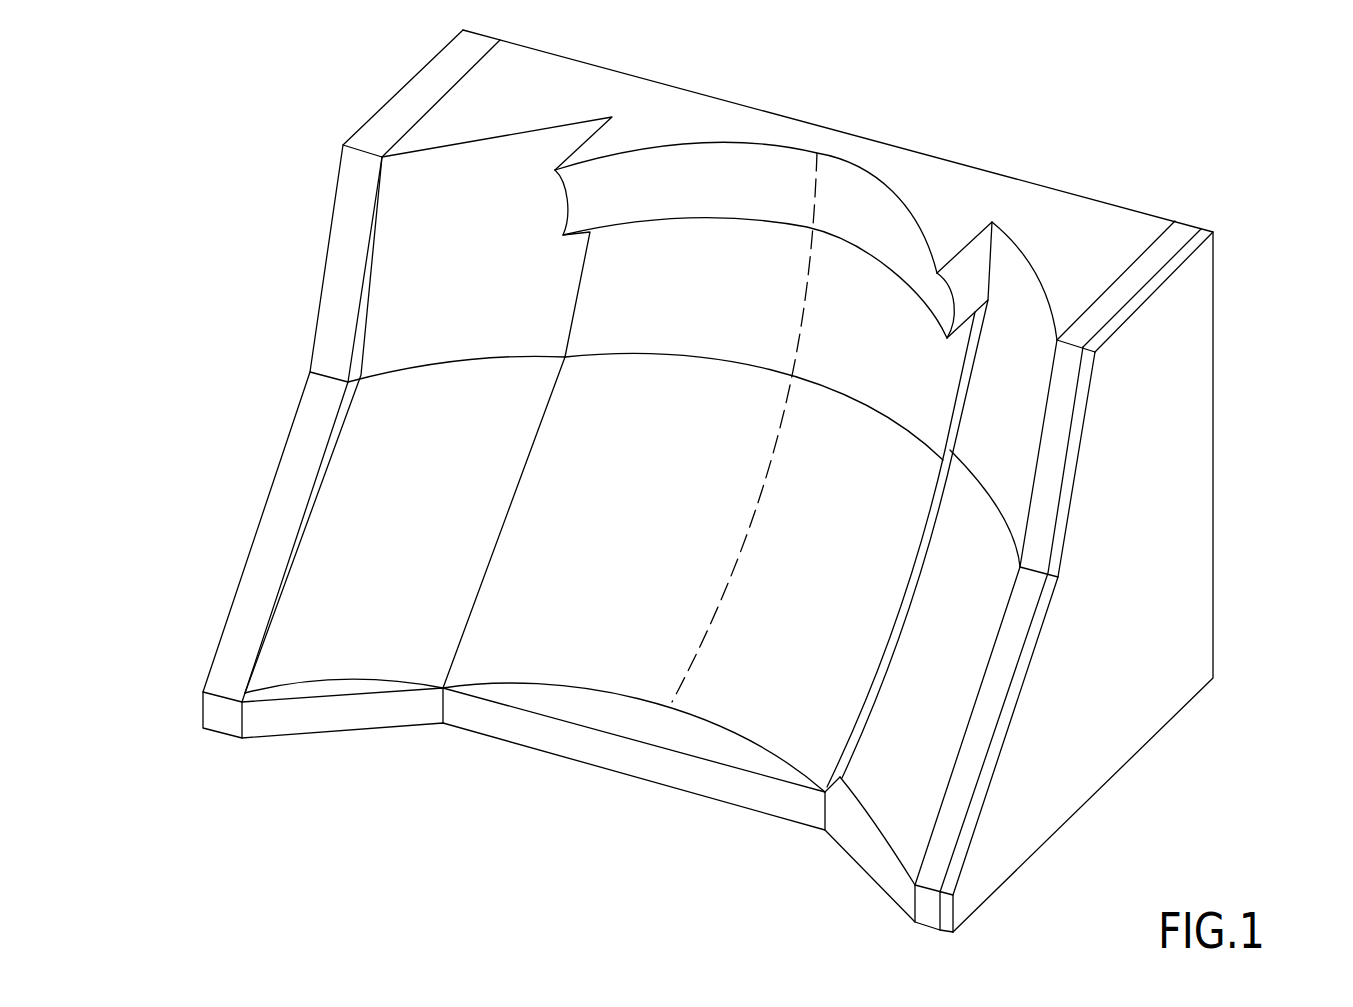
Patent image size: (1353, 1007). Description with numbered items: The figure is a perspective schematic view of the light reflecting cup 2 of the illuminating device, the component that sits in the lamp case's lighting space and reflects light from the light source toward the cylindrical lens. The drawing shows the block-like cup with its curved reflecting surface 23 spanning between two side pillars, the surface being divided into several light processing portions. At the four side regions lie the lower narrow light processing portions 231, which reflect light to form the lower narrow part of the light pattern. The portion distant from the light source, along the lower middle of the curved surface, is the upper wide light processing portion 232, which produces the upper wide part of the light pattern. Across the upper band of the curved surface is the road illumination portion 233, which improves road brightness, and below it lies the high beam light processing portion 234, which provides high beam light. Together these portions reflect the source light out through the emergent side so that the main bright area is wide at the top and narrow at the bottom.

The light reflecting cup 2 is at (1207, 207).
The curved front surface 23 is at (743, 670).
The lower narrow light processing portion 231 is at (412, 268).
The upper wide light processing portion 232 is at (647, 670).
The road illumination portion 233 is at (800, 177).
The high beam light processing portion 234 is at (770, 280).